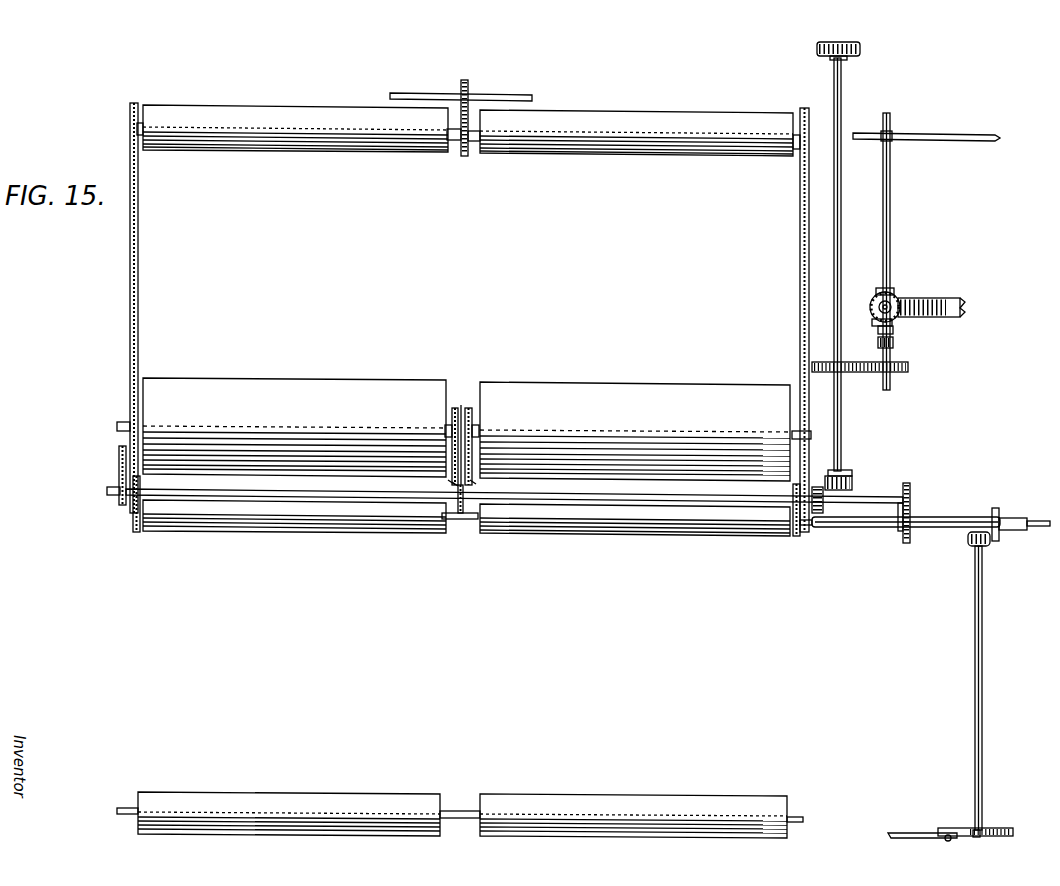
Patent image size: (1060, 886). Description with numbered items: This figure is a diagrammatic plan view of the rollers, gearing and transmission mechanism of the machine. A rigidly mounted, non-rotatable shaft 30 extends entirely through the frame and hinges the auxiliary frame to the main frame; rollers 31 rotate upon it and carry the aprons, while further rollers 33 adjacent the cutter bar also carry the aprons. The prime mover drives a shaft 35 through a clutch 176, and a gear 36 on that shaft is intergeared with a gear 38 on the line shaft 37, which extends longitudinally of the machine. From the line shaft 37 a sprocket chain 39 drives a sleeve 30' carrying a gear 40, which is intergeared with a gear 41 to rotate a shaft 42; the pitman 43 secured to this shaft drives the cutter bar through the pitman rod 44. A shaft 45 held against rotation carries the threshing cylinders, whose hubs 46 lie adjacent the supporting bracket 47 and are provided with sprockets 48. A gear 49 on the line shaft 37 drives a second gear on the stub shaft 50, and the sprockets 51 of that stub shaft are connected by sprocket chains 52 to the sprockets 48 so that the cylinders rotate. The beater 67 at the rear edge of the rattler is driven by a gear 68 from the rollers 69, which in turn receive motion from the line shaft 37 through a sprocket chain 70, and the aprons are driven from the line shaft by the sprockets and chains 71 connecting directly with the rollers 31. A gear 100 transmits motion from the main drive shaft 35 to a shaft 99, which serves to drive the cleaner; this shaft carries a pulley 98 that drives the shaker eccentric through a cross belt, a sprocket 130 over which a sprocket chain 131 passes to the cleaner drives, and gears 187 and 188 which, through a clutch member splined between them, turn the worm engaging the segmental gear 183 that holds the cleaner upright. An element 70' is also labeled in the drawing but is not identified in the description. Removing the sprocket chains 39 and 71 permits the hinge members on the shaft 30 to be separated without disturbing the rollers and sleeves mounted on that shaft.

The shaft 30 is at (762, 552).
The sleeve 30' is at (906, 538).
The rollers 31 is at (293, 526).
The rollers 33 is at (330, 802).
The drive shaft 35 is at (841, 248).
The gear 36 is at (852, 478).
The line shaft 37 is at (107, 491).
The gear 38 is at (813, 488).
The sprocket chain 39 is at (911, 506).
The gear 40 is at (1004, 510).
The gear 41 is at (998, 537).
The shaft 42 is at (983, 672).
The pitman 43 is at (1000, 832).
The pitman rod 44 is at (925, 828).
The shaft 45 is at (118, 425).
The hubs 46 is at (450, 420).
The supporting bracket 47 is at (461, 407).
The sprockets 48 is at (459, 518).
The gear 49 is at (458, 484).
The stub shaft 50 is at (473, 482).
The sprockets 51 is at (452, 483).
The sprocket chains 52 is at (452, 445).
The beater 67 is at (475, 96).
The gear 68 is at (448, 128).
The rollers 69 is at (280, 140).
The sprocket chain 70 is at (115, 308).
The frame bar 70' is at (780, 320).
The sprockets and chains 71 is at (124, 510).
The pulley 98 is at (878, 343).
The shaft 99 is at (891, 248).
The gear 100 is at (874, 373).
The sprocket 130 is at (892, 140).
The sprocket chain 131 is at (938, 130).
The clutch 176 is at (861, 50).
The segmental gear 183 is at (922, 300).
The gear 187 is at (878, 290).
The gear 188 is at (876, 320).